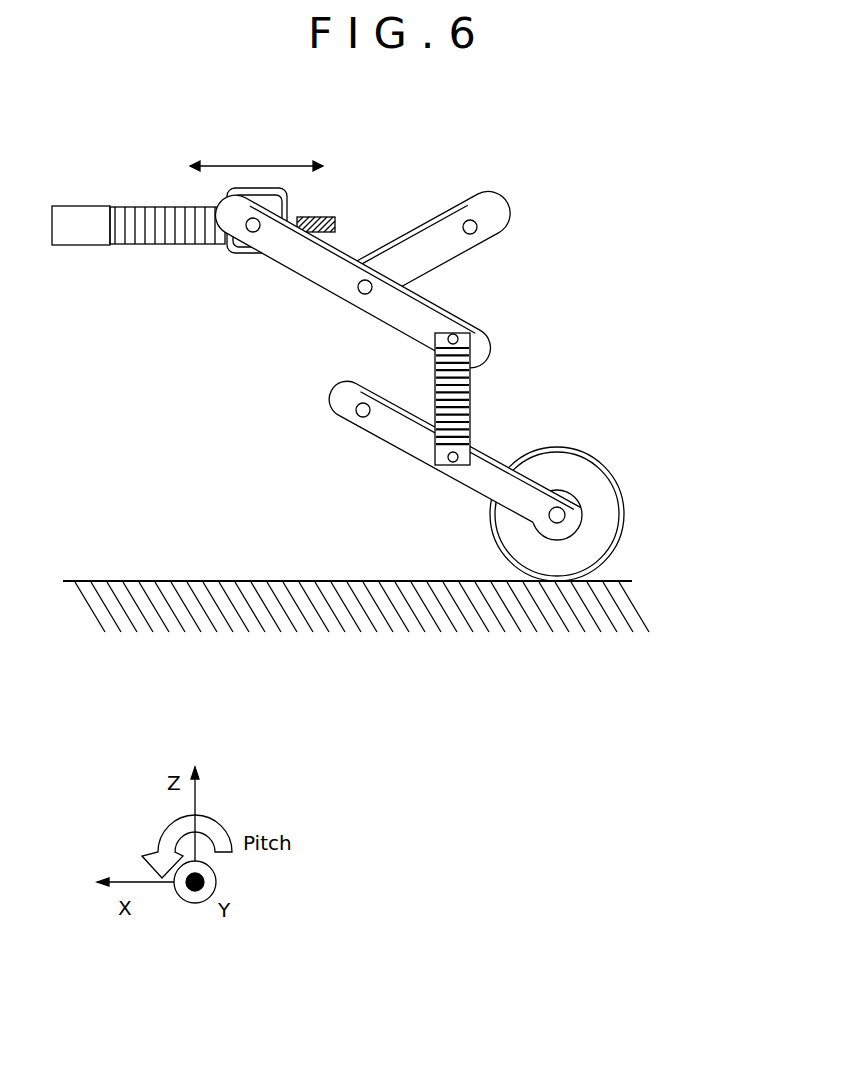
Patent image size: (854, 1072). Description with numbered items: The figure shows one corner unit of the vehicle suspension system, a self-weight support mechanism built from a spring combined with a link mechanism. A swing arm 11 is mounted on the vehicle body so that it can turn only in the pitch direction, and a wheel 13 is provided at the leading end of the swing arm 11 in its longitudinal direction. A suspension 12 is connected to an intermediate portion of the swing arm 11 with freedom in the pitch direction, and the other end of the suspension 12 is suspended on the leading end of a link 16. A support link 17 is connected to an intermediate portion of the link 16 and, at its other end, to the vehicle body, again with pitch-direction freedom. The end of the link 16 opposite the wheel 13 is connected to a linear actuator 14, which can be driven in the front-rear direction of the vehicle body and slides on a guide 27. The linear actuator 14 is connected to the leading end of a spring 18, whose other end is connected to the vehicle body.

The swing arm 11 is at (497, 455).
The suspension 12 is at (470, 397).
The wheel 13 is at (583, 450).
The linear actuator 14 is at (237, 187).
The link 16 is at (455, 310).
The support link 17 is at (493, 214).
The spring 18 is at (158, 245).
The guide 27 is at (327, 217).